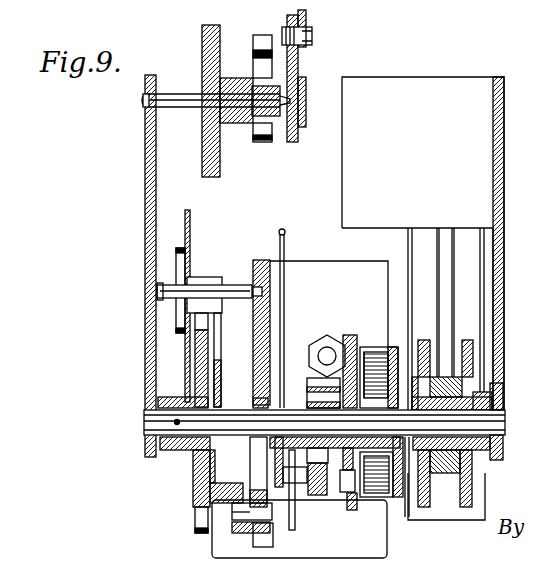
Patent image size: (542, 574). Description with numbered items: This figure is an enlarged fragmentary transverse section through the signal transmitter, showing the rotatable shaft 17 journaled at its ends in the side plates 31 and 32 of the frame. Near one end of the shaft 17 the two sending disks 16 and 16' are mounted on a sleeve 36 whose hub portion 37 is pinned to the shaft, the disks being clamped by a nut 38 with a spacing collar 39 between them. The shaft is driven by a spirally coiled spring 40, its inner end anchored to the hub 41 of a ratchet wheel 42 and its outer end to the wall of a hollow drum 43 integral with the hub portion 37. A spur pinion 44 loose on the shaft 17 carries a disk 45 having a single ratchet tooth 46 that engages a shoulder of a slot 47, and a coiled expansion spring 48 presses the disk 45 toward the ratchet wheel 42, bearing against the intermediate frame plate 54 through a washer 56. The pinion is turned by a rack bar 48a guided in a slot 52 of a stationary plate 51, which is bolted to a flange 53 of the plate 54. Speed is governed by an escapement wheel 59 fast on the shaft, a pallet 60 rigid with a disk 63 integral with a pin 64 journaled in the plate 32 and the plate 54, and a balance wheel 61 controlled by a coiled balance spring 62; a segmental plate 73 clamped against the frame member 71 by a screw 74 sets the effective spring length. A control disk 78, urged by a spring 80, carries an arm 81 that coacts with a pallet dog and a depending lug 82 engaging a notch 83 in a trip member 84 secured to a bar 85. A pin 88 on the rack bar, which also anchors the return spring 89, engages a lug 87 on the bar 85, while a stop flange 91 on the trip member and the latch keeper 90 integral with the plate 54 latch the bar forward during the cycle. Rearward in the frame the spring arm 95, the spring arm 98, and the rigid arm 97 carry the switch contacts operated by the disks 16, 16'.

The disk 16 is at (449, 490).
The disk 16' is at (475, 497).
The rotatable shaft 17 is at (155, 421).
The side plate 31 is at (500, 114).
The side plate 32 is at (145, 197).
The sleeve 36 is at (500, 405).
The hub portion 37 is at (406, 517).
The nut 38 is at (492, 465).
The spacing collar 39 is at (446, 382).
The spirally coiled spring 40 is at (372, 348).
The hub 41 is at (404, 378).
The ratchet wheel 42 is at (352, 335).
The hollow drum 43 is at (394, 350).
The spur pinion 44 is at (307, 372).
The disk 45 is at (344, 336).
The ratchet tooth 46 is at (352, 508).
The slot 47 is at (372, 498).
The coiled expansion spring 48 is at (306, 400).
The rack bar 48a is at (340, 480).
The stationary plate 51 is at (387, 550).
The slot 52 is at (310, 495).
The flange 53 is at (323, 268).
The intermediate frame plate 54 is at (254, 262).
The washer 56 is at (255, 402).
The escapement wheel 59 is at (196, 480).
The pallet 60 is at (199, 212).
The balance wheel 61 is at (222, 158).
The coiled balance spring 62 is at (256, 38).
The disk 63 is at (180, 307).
The pin 64 is at (157, 293).
The frame member 71 is at (298, 58).
The segmental plate 73 is at (306, 70).
The screw 74 is at (312, 33).
The control disk 78 is at (221, 364).
The spring 80 is at (195, 462).
The arm 81 is at (209, 322).
The depending lug 82 is at (220, 496).
The notch 83 is at (232, 512).
The trip member 84 is at (250, 505).
The bar 85 is at (250, 533).
The lug 87 is at (296, 485).
The pin 88 is at (280, 478).
The spring 89 is at (282, 229).
The latch keeper 90 is at (212, 540).
The stop flange 91 is at (273, 545).
The spring arm 95 is at (420, 241).
The arm 97 is at (445, 252).
The spring arm 98 is at (466, 236).